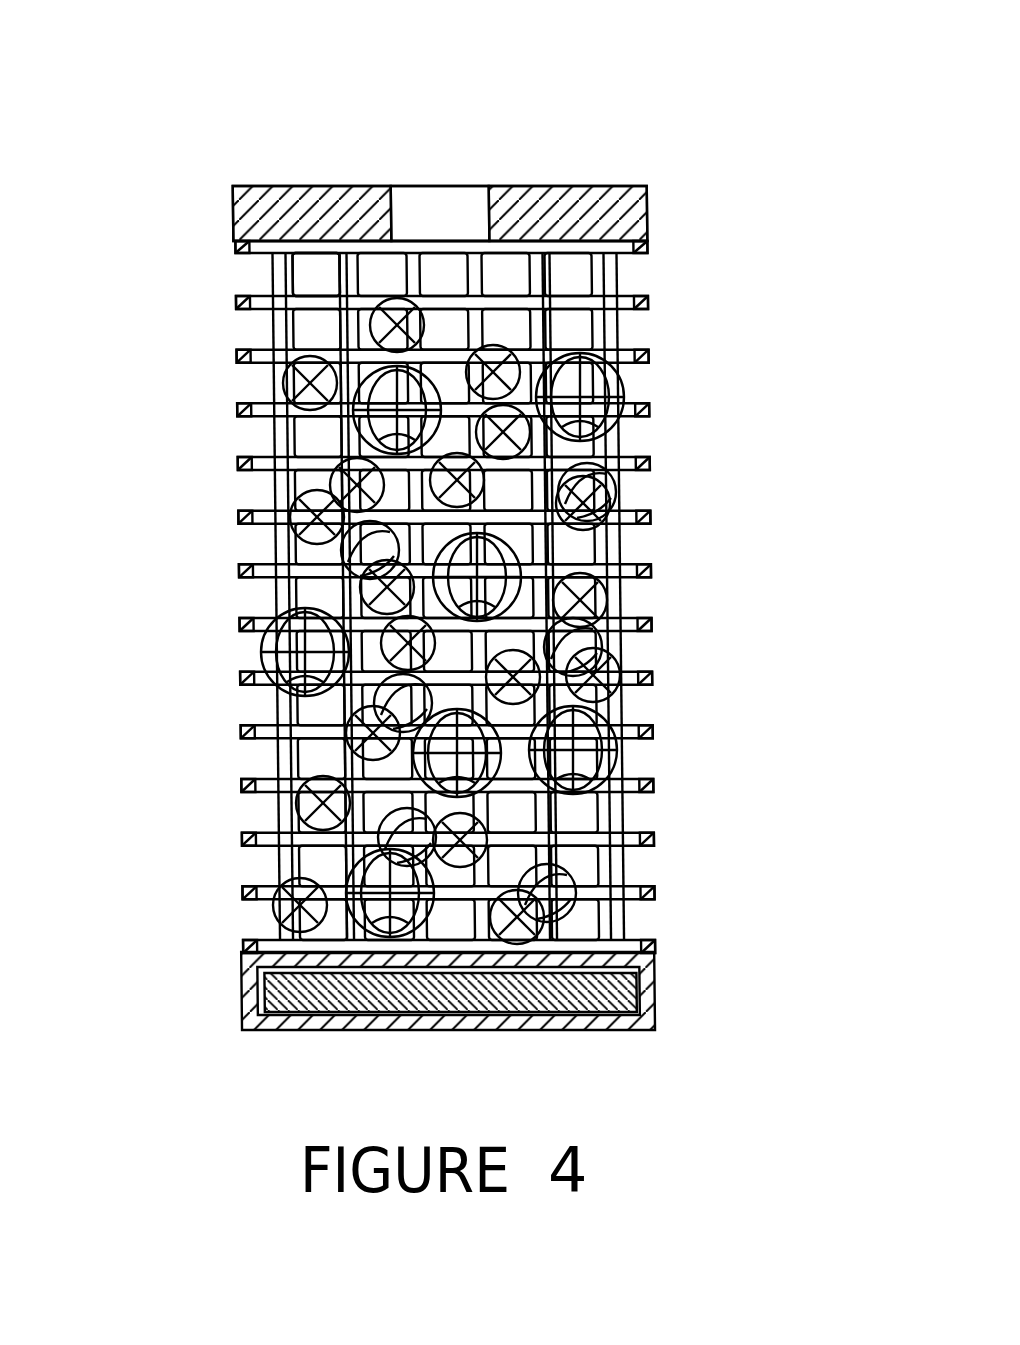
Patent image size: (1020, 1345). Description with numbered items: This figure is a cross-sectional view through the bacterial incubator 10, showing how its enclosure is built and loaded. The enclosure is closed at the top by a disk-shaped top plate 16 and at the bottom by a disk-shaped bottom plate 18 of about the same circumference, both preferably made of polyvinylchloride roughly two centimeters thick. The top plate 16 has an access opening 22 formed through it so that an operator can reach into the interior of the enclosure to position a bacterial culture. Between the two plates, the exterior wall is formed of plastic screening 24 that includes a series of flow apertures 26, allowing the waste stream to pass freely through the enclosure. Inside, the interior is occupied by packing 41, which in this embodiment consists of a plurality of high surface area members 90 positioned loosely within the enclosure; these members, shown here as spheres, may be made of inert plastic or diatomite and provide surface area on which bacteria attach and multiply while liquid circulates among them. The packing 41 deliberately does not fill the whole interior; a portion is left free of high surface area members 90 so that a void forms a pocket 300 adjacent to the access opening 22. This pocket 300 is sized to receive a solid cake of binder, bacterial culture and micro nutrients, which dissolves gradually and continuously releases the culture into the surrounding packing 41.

The bacterial incubator 10 is at (456, 545).
The top plate 16 is at (485, 127).
The bottom plate 18 is at (600, 998).
The access opening 22 is at (442, 207).
The plastic screening 24 is at (647, 461).
The flow apertures 26 is at (568, 278).
The pocket 300 is at (412, 277).
The high surface area members 90 is at (356, 621).
The packing 41 is at (313, 378).